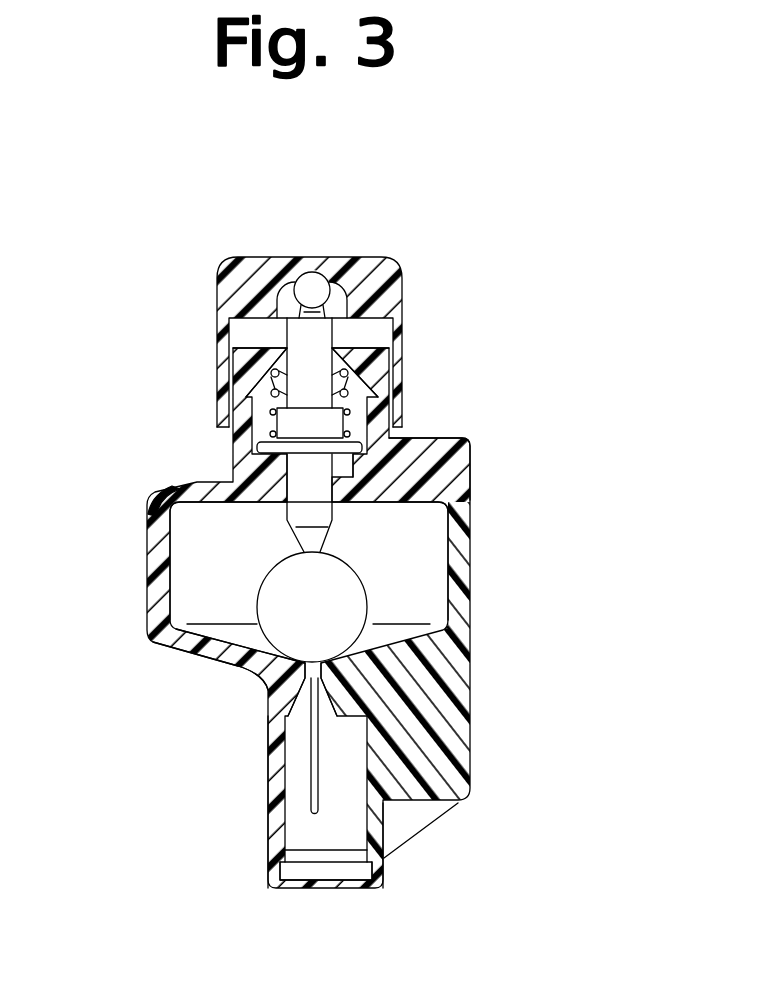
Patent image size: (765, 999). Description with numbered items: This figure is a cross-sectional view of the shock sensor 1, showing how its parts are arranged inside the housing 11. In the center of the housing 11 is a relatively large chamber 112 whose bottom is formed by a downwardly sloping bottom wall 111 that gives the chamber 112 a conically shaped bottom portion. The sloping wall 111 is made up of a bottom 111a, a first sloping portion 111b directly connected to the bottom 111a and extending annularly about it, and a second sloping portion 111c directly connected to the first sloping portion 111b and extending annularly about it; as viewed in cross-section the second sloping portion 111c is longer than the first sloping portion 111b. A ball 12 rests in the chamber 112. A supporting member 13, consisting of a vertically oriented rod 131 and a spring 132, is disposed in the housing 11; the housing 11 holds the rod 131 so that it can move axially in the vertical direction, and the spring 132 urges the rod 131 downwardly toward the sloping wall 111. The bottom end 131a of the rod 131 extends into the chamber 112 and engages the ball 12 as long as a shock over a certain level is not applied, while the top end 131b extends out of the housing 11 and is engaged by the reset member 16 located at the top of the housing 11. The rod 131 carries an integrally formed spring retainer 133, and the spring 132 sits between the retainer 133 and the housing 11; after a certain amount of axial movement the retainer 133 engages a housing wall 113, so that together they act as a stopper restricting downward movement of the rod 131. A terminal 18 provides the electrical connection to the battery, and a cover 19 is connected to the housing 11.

The shock sensor 1 is at (446, 416).
The housing 11 is at (471, 678).
The downwardly sloping bottom wall 111 is at (214, 648).
The bottom 111a is at (267, 732).
The first sloping portion 111b is at (268, 684).
The second sloping portion 111c is at (155, 647).
The chamber 112 is at (150, 544).
The housing wall 113 is at (400, 477).
The ball 12 is at (350, 602).
The supporting member 13 is at (337, 335).
The rod 131 is at (306, 468).
The bottom end 131a is at (317, 537).
The top end 131b is at (311, 286).
The spring 132 is at (268, 363).
The spring retainer 133 is at (250, 418).
The reset member 16 is at (370, 262).
The terminal 18 is at (318, 775).
The cover 19 is at (147, 508).